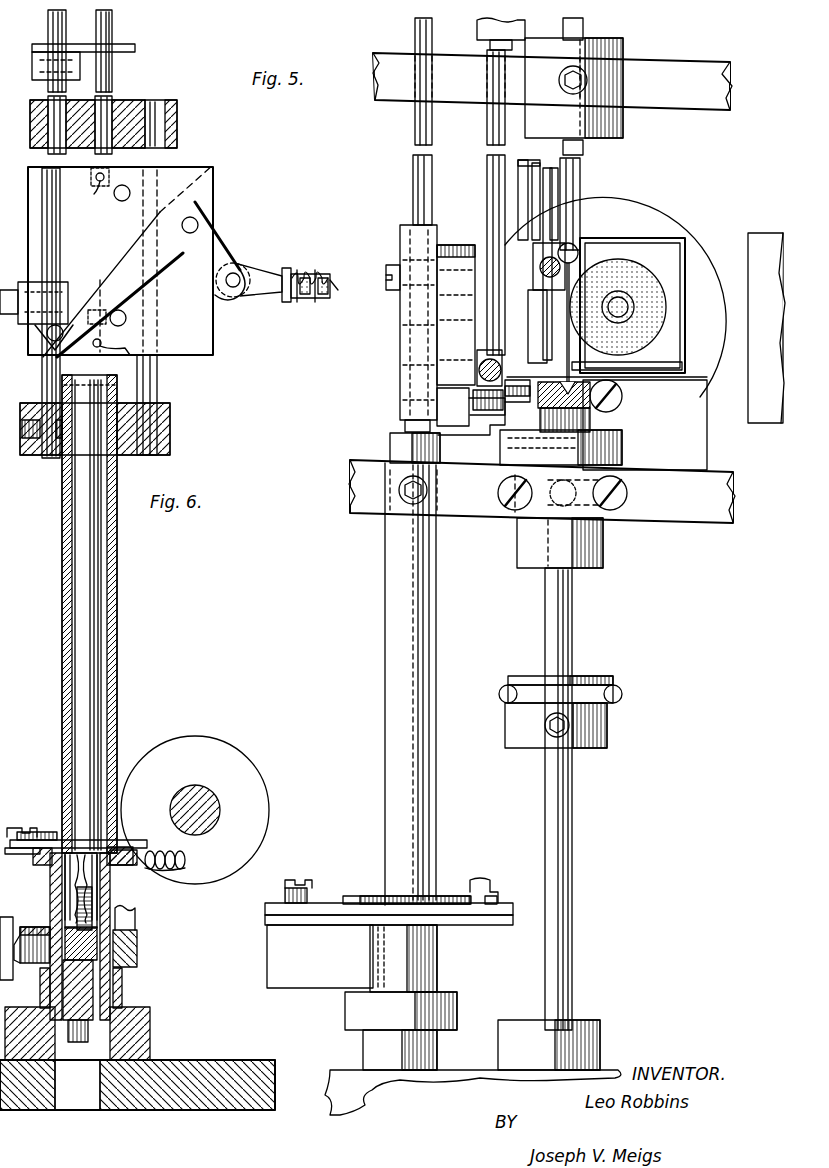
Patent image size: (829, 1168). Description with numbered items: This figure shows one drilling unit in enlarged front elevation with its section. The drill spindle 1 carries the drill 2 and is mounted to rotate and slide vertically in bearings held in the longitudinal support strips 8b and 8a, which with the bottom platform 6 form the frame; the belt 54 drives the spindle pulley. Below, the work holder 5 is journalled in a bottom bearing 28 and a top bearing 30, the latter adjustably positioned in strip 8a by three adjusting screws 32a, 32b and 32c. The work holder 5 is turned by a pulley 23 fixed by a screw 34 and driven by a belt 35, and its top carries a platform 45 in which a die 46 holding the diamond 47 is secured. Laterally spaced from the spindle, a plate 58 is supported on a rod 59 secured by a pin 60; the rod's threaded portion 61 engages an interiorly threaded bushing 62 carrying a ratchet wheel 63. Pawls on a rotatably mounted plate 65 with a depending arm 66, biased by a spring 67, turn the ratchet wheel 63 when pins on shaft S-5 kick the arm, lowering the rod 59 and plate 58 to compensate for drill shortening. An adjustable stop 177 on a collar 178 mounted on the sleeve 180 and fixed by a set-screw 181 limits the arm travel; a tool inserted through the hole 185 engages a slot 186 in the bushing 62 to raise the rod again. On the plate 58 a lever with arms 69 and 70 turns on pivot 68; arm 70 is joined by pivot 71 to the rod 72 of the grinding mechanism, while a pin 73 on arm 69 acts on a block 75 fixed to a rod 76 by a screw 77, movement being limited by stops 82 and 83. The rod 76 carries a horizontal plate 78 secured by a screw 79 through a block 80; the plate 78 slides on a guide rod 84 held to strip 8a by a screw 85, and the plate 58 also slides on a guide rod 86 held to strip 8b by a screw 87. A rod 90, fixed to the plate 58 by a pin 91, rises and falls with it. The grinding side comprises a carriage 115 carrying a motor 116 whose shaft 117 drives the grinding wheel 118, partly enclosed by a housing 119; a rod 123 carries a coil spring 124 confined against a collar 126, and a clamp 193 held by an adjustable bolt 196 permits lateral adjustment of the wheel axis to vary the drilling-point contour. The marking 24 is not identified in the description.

In FIG. 5, the drill spindle 1 is at (530, 258).
In FIG. 5, the drill 2 is at (579, 324).
In FIG. 5, the work holder 5 is at (560, 796).
In FIG. 6, the bottom platform 6 is at (200, 1068).
In FIG. 5, the bottom platform 6 is at (522, 34).
In FIG. 6, the longitudinal support strip 8a is at (172, 432).
In FIG. 5, the longitudinal support strip 8a is at (715, 516).
In FIG. 6, the longitudinal support strip 8b is at (178, 103).
In FIG. 5, the longitudinal support strip 8b is at (730, 84).
In FIG. 5, the pulley 23 is at (607, 730).
In FIG. 5, the bobbin 24 is at (637, 273).
In FIG. 5, the bottom bearing 28 is at (600, 1040).
In FIG. 5, the top bearing 30 is at (520, 545).
In FIG. 5, the adjusting screw 32a is at (493, 493).
In FIG. 5, the adjusting screw 32b is at (628, 493).
In FIG. 5, the adjusting screw 32c is at (595, 522).
In FIG. 5, the screw 34 is at (550, 738).
In FIG. 5, the belt 35 is at (620, 690).
In FIG. 5, the platform 45 is at (622, 452).
In FIG. 5, the die 46 is at (538, 393).
In FIG. 5, the diamond 47 is at (622, 393).
In FIG. 6, the belt 54 is at (14, 830).
In FIG. 6, the plate 58 is at (200, 328).
In FIG. 5, the plate 58 is at (400, 392).
In FIG. 6, the rod 59 is at (94, 596).
In FIG. 5, the rod 59 is at (405, 424).
In FIG. 6, the pin 60 is at (150, 358).
In FIG. 6, the threaded portion 61 is at (112, 955).
In FIG. 6, the threaded bushing 62 is at (110, 893).
In FIG. 6, the ratchet wheel 63 is at (42, 840).
In FIG. 5, the ratchet wheel 63 is at (368, 903).
In FIG. 5, the rotatably mounted plate 65 is at (275, 908).
In FIG. 5, the depending arm 66 is at (268, 964).
In FIG. 6, the spring 67 is at (186, 862).
In FIG. 5, the spring 67 is at (328, 915).
In FIG. 6, the pivot 68 is at (198, 224).
In FIG. 5, the pivot 68 is at (412, 318).
In FIG. 6, the arm 69 is at (118, 270).
In FIG. 5, the arm 69 is at (445, 358).
In FIG. 6, the arm 70 is at (228, 250).
In FIG. 6, the pivot 71 is at (240, 275).
In FIG. 6, the rod 72 is at (307, 274).
In FIG. 6, the pin 73 is at (42, 352).
In FIG. 5, the pin 73 is at (485, 425).
In FIG. 6, the block 75 is at (70, 322).
In FIG. 5, the block 75 is at (480, 360).
In FIG. 6, the rod 76 is at (50, 22).
In FIG. 5, the rod 76 is at (487, 183).
In FIG. 6, the screw 77 is at (26, 292).
In FIG. 5, the screw 77 is at (490, 352).
In FIG. 6, the horizontal plate 78 is at (118, 50).
In FIG. 6, the screw 79 is at (30, 68).
In FIG. 6, the block 80 is at (62, 60).
In FIG. 6, the stop 82 is at (130, 190).
In FIG. 5, the stop 82 is at (455, 246).
In FIG. 6, the stop 83 is at (126, 318).
In FIG. 5, the stop 83 is at (400, 437).
In FIG. 6, the guide rod 84 is at (42, 392).
In FIG. 5, the guide rod 84 is at (416, 200).
In FIG. 6, the screw 85 is at (22, 440).
In FIG. 5, the screw 85 is at (405, 495).
In FIG. 6, the guide rod 86 is at (213, 168).
In FIG. 6, the screw 87 is at (178, 133).
In FIG. 6, the rod 90 is at (110, 78).
In FIG. 6, the pin 91 is at (94, 191).
In FIG. 5, the carriage 115 is at (702, 390).
In FIG. 5, the motor 116 is at (680, 195).
In FIG. 5, the shaft 117 is at (630, 308).
In FIG. 5, the grinding wheel 118 is at (656, 296).
In FIG. 5, the housing 119 is at (650, 240).
In FIG. 6, the rod 123 is at (326, 300).
In FIG. 6, the coil spring 124 is at (330, 284).
In FIG. 5, the coil spring 124 is at (400, 268).
In FIG. 6, the collar 126 is at (286, 302).
In FIG. 6, the adjustable stop 177 is at (136, 928).
In FIG. 5, the adjustable stop 177 is at (400, 970).
In FIG. 6, the collar 178 is at (125, 980).
In FIG. 5, the collar 178 is at (348, 1010).
In FIG. 6, the sleeve 180 is at (50, 882).
In FIG. 5, the sleeve 180 is at (435, 985).
In FIG. 6, the set-screw 181 is at (30, 928).
In FIG. 6, the hole 185 is at (84, 1100).
In FIG. 6, the slot 186 is at (100, 917).
In FIG. 5, the clamp 193 is at (626, 366).
In FIG. 5, the adjustable bolt 196 is at (616, 410).
In FIG. 6, the shaft S-5 is at (215, 826).